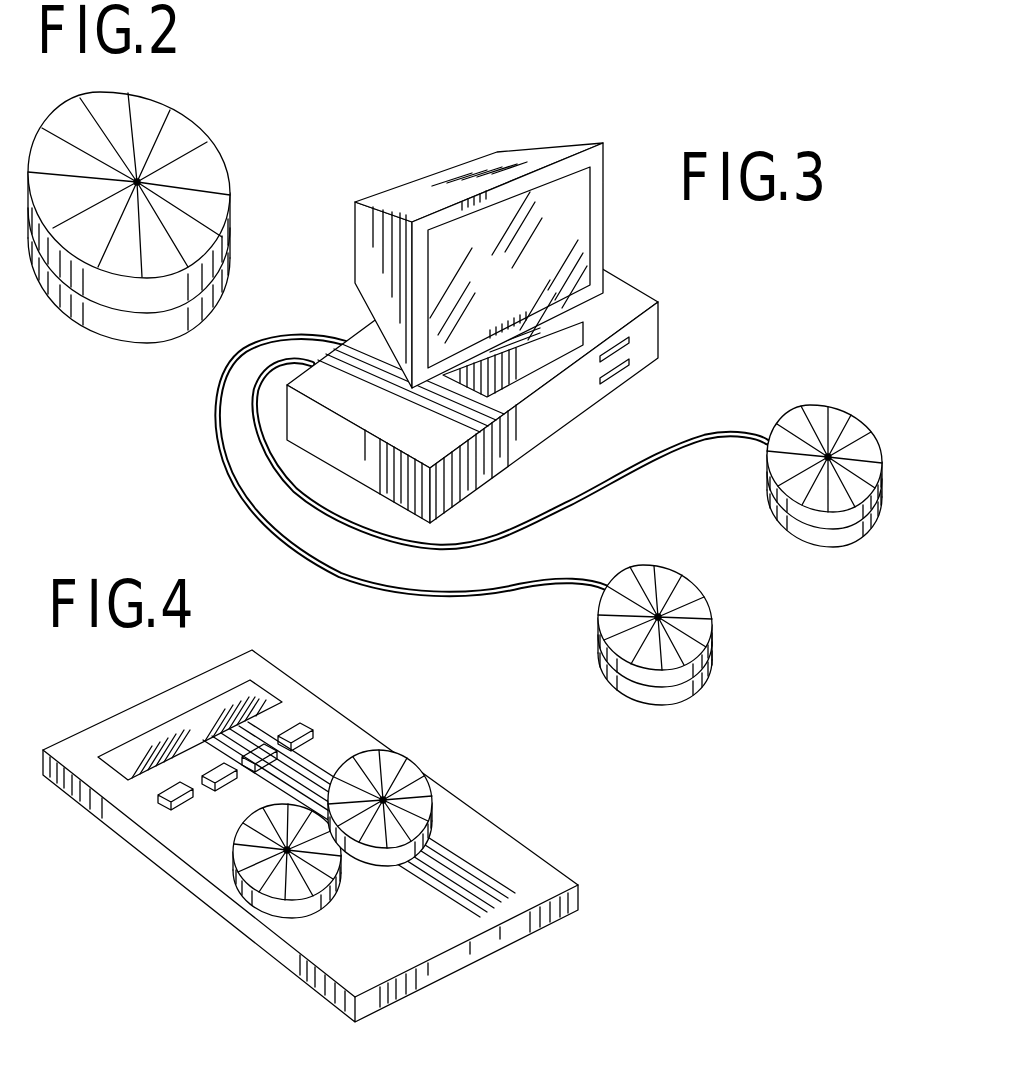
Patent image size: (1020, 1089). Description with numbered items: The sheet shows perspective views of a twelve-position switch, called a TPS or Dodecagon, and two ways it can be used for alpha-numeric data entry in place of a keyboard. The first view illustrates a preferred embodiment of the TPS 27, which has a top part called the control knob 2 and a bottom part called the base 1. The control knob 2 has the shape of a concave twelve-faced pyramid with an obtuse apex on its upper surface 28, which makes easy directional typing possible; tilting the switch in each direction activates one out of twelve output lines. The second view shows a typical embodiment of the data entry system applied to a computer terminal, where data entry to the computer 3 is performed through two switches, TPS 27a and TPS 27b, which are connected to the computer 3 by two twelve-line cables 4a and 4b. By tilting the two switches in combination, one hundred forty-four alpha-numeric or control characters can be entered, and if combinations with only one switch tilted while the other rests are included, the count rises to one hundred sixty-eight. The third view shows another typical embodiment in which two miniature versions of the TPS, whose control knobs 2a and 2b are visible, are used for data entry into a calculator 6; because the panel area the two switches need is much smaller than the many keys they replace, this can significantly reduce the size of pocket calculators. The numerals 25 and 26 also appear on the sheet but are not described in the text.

In FIG. 2, the base 1 is at (144, 203).
In FIG. 3, the base 1 is at (706, 555).
In FIG. 2, the control knob 2 is at (134, 170).
In FIG. 3, the control knob 2 is at (767, 467).
In FIG. 4, the control knob 2a is at (243, 888).
In FIG. 4, the control knob 2b is at (403, 775).
In FIG. 3, the computer 3 is at (640, 293).
In FIG. 3, the 12-line cable 4a is at (428, 598).
In FIG. 3, the 12-line cable 4b is at (583, 508).
In FIG. 4, the calculator 6 is at (150, 722).
In FIG. 3, the element 25 is at (545, 0).
In FIG. 3, the element 26 is at (781, 0).
In FIG. 2, the TPS 27 is at (210, 303).
In FIG. 3, the TPS 27a is at (627, 690).
In FIG. 3, the TPS 27b is at (882, 488).
In FIG. 2, the upper surface 28 is at (180, 125).